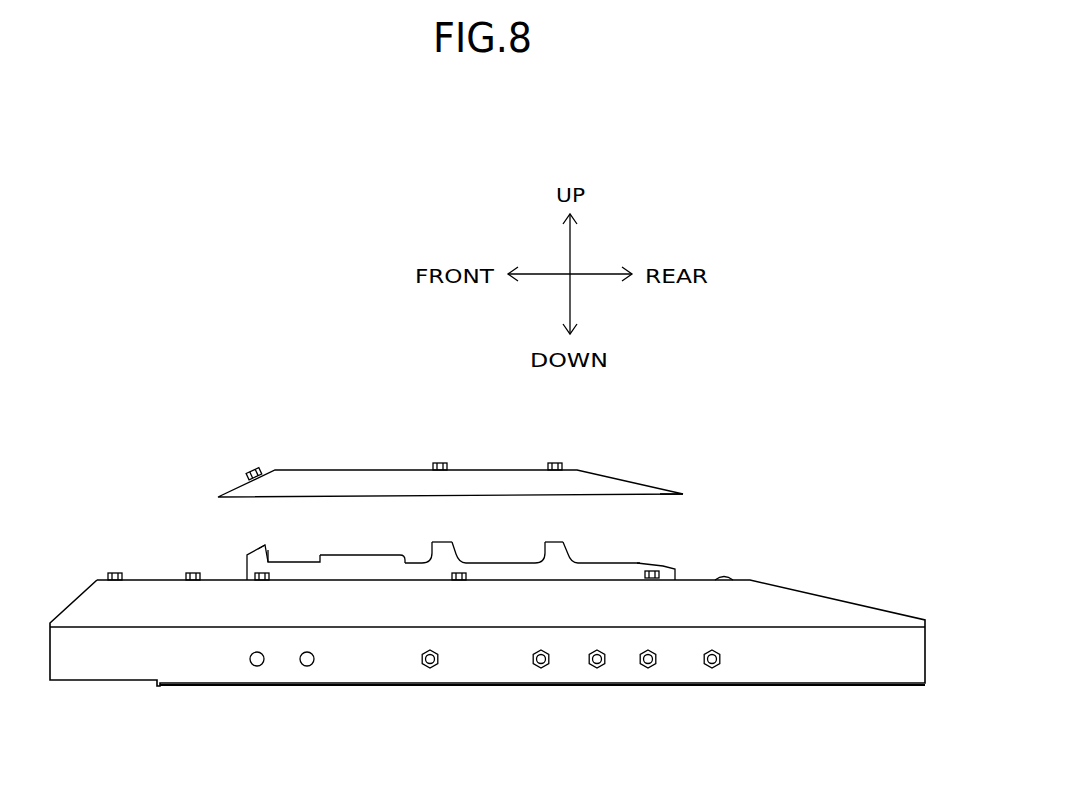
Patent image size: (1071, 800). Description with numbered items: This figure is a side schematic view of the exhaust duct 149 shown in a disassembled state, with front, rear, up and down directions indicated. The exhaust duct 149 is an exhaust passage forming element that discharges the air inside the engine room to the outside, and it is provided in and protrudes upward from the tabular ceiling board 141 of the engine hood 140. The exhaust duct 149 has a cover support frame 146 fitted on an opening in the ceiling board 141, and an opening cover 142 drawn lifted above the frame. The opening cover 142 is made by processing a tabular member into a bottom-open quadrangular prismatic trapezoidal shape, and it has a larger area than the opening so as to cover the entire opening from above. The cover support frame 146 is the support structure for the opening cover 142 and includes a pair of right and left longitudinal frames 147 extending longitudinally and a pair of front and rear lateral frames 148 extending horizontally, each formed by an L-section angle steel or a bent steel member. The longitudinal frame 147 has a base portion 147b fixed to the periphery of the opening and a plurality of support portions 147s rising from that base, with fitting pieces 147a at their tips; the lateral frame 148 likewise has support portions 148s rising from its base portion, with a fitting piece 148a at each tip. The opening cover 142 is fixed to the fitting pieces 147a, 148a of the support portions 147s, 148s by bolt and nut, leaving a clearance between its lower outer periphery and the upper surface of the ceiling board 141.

The engine hood 140 is at (487, 563).
The ceiling board 141 is at (697, 578).
The opening cover 142 is at (592, 473).
The cover support frame 146 is at (640, 567).
The longitudinal frame 147 is at (481, 626).
The fitting piece 147a is at (433, 542).
The base portion 147b is at (382, 580).
The support portion 147s is at (455, 550).
The lateral frame 148 is at (234, 626).
The fitting piece 148a is at (262, 548).
The support portion 148s is at (269, 556).
The exhaust duct 149 is at (697, 492).